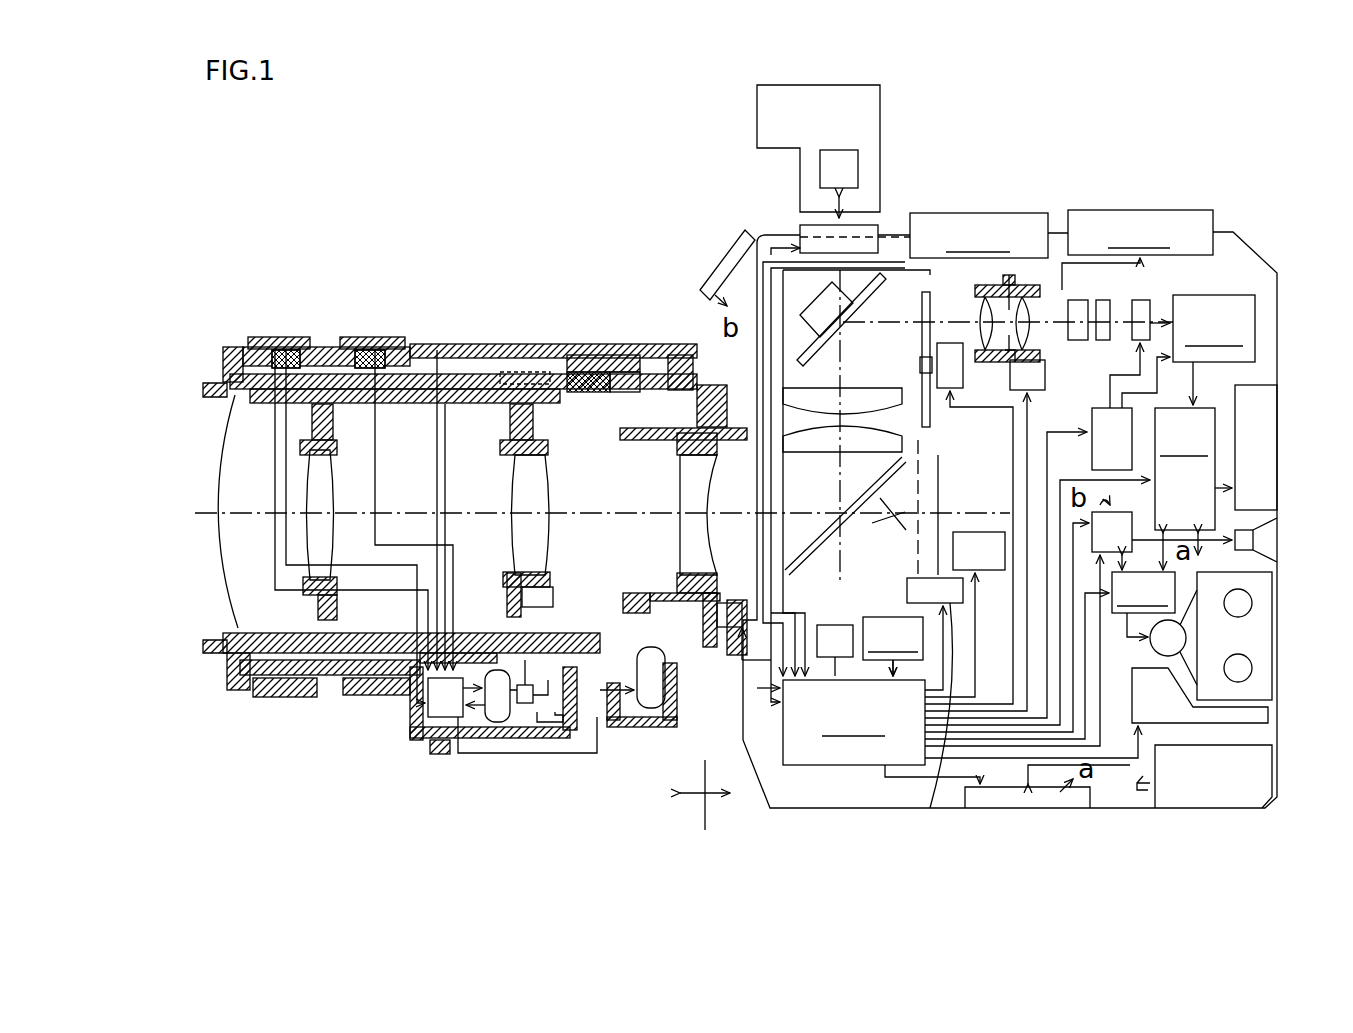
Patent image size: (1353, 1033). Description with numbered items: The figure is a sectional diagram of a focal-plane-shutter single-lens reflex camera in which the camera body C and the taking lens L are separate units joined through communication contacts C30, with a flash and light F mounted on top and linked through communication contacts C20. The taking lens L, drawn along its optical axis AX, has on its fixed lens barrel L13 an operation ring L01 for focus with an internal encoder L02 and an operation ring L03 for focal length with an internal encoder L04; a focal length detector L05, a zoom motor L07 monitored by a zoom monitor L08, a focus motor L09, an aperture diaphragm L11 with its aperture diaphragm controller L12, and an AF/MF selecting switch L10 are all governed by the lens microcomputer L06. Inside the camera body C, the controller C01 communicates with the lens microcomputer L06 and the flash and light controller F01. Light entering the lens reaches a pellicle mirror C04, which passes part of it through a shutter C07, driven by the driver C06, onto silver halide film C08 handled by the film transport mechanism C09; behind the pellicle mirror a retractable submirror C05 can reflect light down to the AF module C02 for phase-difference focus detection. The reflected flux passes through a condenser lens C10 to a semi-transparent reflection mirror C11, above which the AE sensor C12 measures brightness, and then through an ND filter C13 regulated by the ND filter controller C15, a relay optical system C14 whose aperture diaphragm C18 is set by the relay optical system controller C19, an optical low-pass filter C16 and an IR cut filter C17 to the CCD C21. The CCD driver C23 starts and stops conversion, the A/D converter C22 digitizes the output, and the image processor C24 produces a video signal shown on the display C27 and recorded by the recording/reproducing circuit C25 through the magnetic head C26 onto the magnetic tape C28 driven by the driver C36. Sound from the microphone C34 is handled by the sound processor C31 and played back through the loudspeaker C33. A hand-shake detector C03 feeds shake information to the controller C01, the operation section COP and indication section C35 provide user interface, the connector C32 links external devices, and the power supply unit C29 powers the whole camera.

The flash and light controller F01 is at (852, 160).
The flash and light F is at (775, 212).
The communication contacts C20 is at (878, 228).
The operation section COP is at (979, 235).
The indication section C35 is at (1140, 232).
The microphone C34 is at (735, 290).
The brightness detector C12 is at (803, 313).
The reflection mirror C11 is at (852, 312).
The ND filter C13 is at (928, 322).
The aperture diaphragm C18 is at (925, 338).
The ND filter controller C15 is at (950, 368).
The relay optical system C14 is at (1020, 285).
The relay optical system controller C19 is at (1043, 368).
The optical low-pass filter C16 is at (1078, 300).
The IR cut filter C17 is at (1103, 318).
The CCD C21 is at (1141, 300).
The image sensing processor C22 is at (1214, 328).
The condenser lens C10 is at (818, 445).
The pellicle mirror C04 is at (800, 558).
The submirror C05 is at (883, 512).
The shutter C07 is at (918, 460).
The silver halide film C08 is at (938, 480).
The film transport mechanism C09 is at (990, 548).
The hand-shake detector C03 is at (833, 633).
The focus condition detector C02 is at (893, 638).
The controller C01 is at (854, 722).
The shutter driver C06 is at (926, 727).
The CCD driver C23 is at (1100, 425).
The image processor C24 is at (1185, 469).
The display C27 is at (1260, 437).
The sound processor C31 is at (1120, 530).
The loudspeaker C33 is at (1258, 538).
The recording/reproducing circuit C25 is at (1143, 592).
The magnetic head C26 is at (1175, 640).
The magnetic tape C28 is at (1255, 585).
The magnetic tape driver C36 is at (1145, 695).
The power supply unit C29 is at (1213, 776).
The connector C32 is at (1010, 800).
The camera body C is at (865, 818).
The operation ring L01 is at (275, 348).
The encoder L02 is at (286, 350).
The operation ring L03 is at (380, 345).
The encoder L04 is at (365, 345).
The fixed lens barrel L13 is at (438, 345).
The focal length detector L05 is at (520, 372).
The aperture diaphragm L11 is at (510, 585).
The aperture diaphragm controller L12 is at (540, 595).
The communication contacts C30 is at (735, 610).
The controller L06 is at (438, 705).
The zoom motor L07 is at (500, 722).
The zoom monitor L08 is at (560, 722).
The focus motor L09 is at (655, 690).
The AF/MF selecting switch L10 is at (438, 754).
The taking lens L is at (565, 763).
The optical axis AX is at (200, 510).